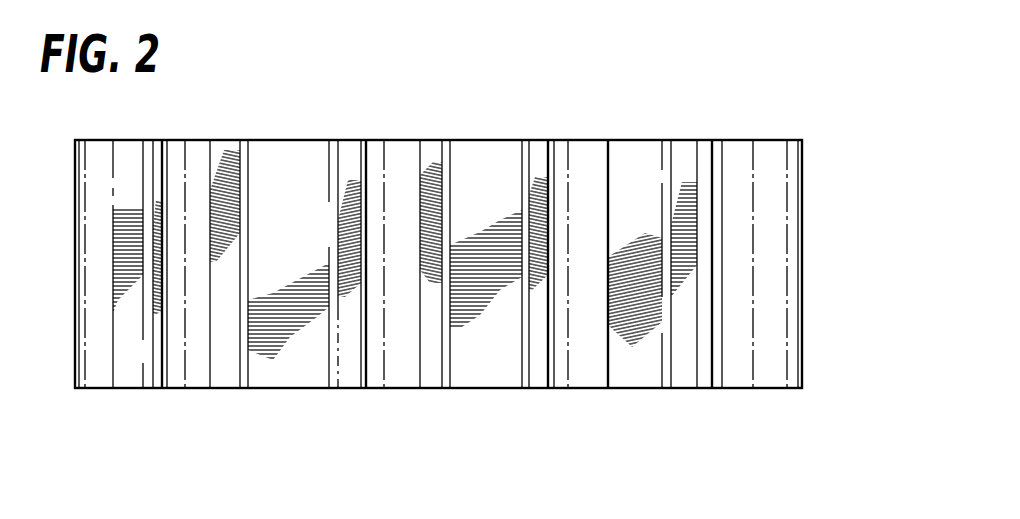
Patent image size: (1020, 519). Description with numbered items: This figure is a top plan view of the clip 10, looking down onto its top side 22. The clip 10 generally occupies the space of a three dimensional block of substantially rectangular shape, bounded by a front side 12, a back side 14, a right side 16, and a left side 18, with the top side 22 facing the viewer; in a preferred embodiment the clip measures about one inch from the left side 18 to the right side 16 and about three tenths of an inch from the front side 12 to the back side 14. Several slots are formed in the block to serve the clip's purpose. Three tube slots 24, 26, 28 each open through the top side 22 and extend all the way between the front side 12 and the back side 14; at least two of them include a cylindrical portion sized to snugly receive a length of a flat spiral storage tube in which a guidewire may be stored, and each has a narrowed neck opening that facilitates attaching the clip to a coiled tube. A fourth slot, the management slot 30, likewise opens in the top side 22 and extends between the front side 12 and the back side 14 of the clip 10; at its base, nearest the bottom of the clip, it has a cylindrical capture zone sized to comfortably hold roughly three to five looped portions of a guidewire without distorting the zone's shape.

The clip 10 is at (748, 84).
The front side 12 is at (640, 389).
The back side 14 is at (637, 140).
The right side 16 is at (802, 263).
The left side 18 is at (75, 263).
The top side 22 is at (289, 155).
The tube slot 24 is at (190, 368).
The tube slot 26 is at (378, 368).
The tube slot 28 is at (570, 368).
The management slot 30 is at (717, 389).